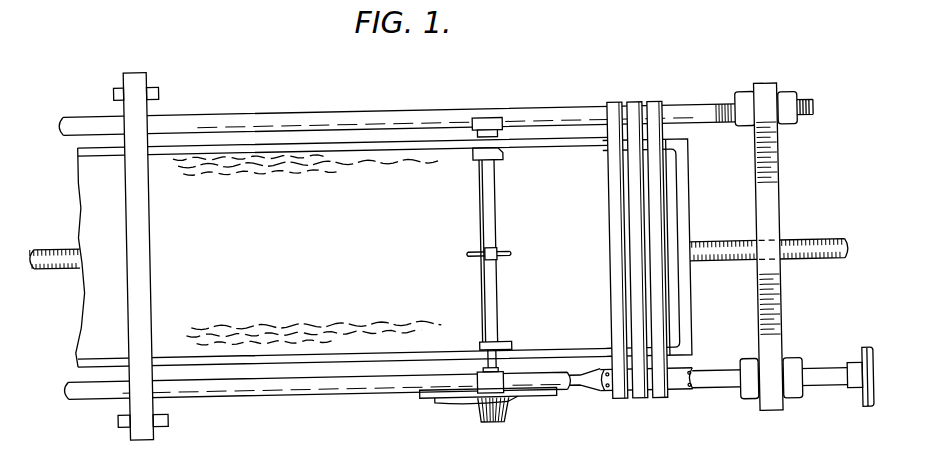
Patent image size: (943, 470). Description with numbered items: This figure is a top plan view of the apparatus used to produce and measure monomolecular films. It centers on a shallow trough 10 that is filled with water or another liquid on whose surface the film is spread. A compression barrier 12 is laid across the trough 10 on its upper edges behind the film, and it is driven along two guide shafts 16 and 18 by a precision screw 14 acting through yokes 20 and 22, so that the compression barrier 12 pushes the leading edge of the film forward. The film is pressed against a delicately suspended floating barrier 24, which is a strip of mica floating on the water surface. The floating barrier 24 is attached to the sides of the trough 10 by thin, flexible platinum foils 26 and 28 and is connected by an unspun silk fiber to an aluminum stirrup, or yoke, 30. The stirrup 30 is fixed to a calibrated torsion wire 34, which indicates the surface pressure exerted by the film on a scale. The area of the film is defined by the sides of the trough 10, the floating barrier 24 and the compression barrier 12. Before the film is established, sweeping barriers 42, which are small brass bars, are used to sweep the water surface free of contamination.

The shallow trough 10 is at (692, 320).
The compression barrier 12 is at (143, 303).
The precision screw 14 is at (812, 258).
The guide shaft 16 is at (262, 393).
The guide shaft 18 is at (310, 118).
The yoke 20 is at (118, 421).
The yoke 22 is at (160, 93).
The floating barrier 24 is at (498, 308).
The platinum foil 26 is at (510, 346).
The platinum foil 28 is at (505, 157).
The stirrup 30 is at (470, 254).
The calibrated torsion wire 34 is at (479, 197).
The sweeping barriers 42 is at (655, 102).